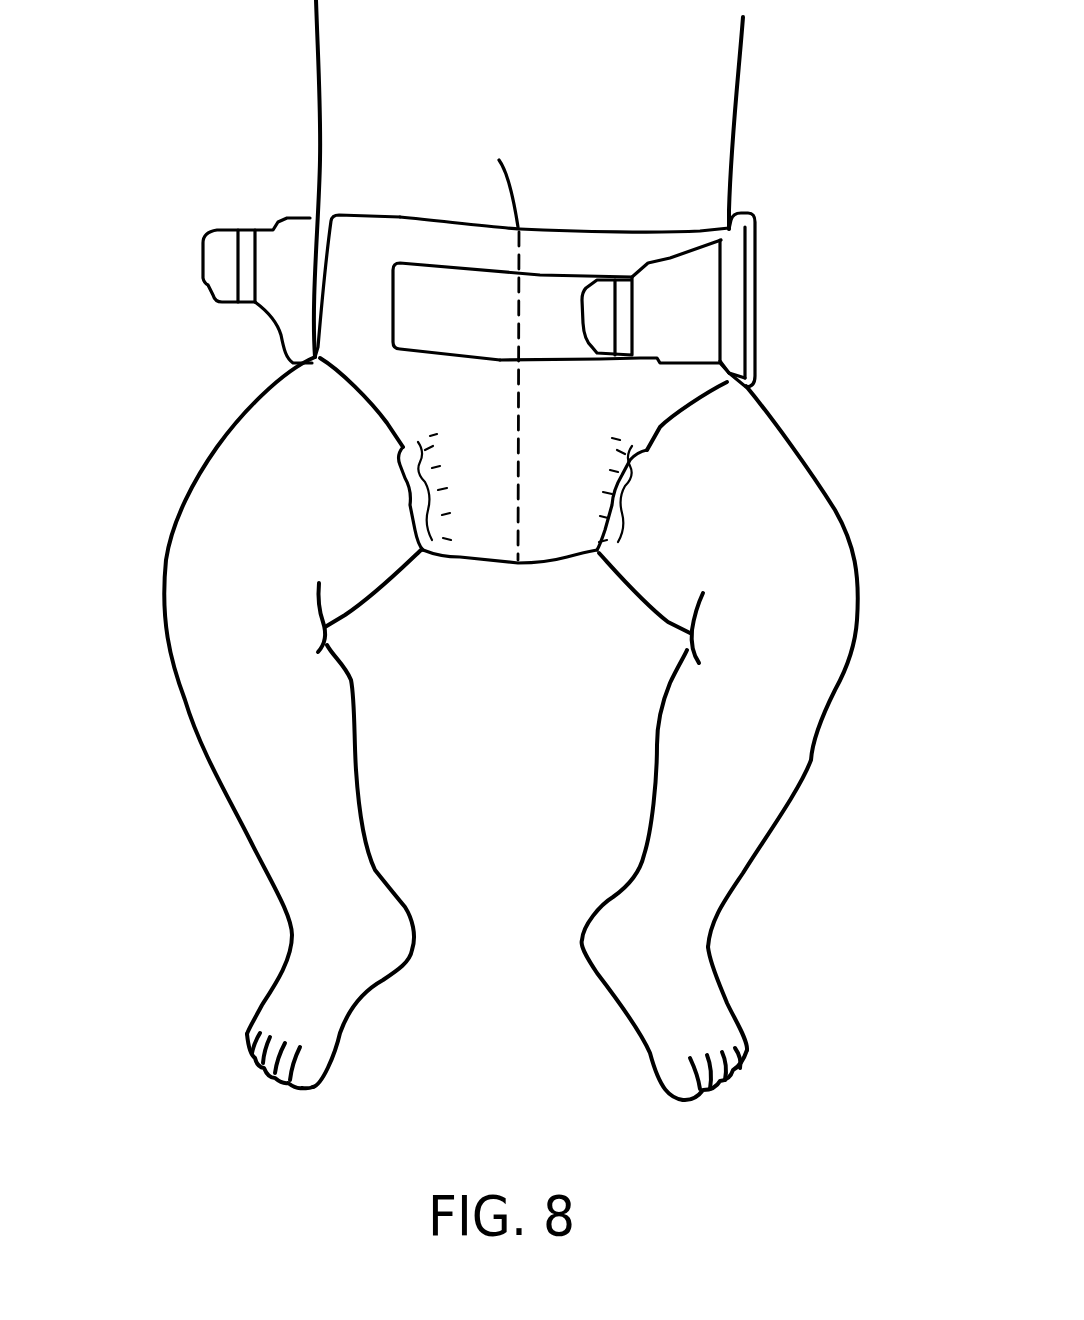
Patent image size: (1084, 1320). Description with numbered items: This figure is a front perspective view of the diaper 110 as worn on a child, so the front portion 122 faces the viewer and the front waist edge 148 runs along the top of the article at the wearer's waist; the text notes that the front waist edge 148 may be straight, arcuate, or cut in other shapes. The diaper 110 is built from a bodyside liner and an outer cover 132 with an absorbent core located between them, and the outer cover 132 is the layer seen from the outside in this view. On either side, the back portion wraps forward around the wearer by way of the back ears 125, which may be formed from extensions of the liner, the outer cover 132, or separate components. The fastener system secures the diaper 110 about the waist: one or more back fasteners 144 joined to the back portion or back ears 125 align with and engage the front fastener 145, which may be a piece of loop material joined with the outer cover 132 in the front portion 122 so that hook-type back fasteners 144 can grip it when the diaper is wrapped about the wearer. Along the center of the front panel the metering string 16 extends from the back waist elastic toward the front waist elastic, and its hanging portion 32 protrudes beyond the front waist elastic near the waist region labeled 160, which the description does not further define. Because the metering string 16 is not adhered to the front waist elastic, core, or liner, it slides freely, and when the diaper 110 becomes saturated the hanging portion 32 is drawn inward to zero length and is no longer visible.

The metering string 16 is at (512, 183).
The hanging portion 32 is at (523, 175).
The diaper 110 is at (782, 291).
The front portion 122 is at (615, 421).
The back ears 125 is at (278, 316).
The outer cover 132 is at (543, 483).
The back fasteners 144 is at (210, 279).
The front fastener 145 is at (490, 347).
The front waist edge 148 is at (390, 218).
The waist band 160 is at (534, 229).